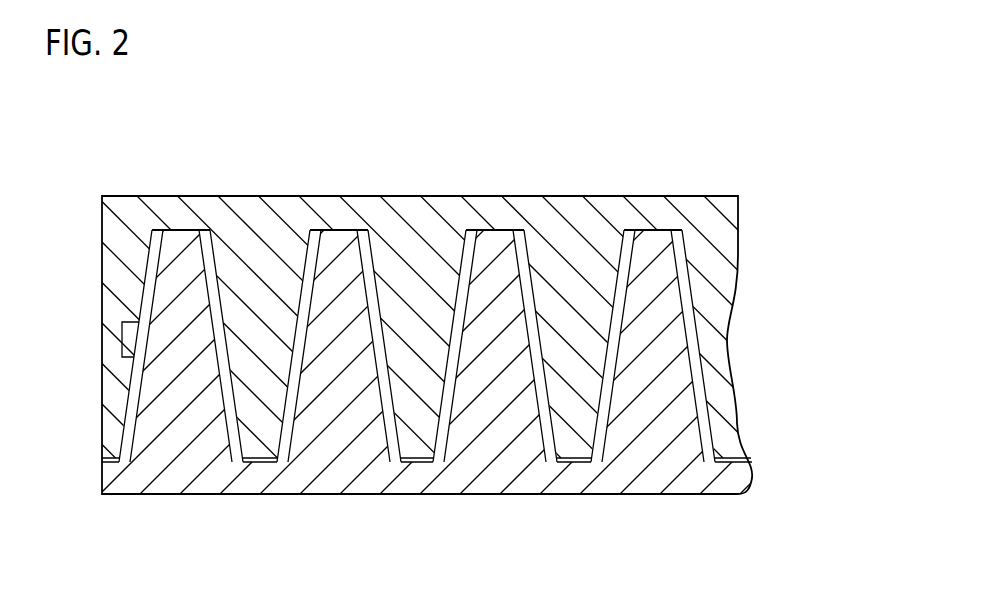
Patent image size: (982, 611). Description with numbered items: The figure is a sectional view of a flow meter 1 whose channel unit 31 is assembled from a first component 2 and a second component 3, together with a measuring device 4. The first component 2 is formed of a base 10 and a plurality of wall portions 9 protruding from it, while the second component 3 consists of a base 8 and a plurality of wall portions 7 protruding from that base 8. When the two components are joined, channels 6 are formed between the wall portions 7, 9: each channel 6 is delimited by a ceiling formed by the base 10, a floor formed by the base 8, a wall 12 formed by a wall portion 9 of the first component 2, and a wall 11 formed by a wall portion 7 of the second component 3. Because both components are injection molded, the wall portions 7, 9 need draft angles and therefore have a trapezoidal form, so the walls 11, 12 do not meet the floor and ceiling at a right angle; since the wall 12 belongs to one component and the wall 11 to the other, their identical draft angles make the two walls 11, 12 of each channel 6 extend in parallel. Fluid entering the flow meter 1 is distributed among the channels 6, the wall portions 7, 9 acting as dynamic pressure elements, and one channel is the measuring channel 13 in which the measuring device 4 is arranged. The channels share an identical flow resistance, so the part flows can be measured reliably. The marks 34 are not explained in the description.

The flow meter 1 is at (587, 136).
The first component 2 is at (250, 190).
The second component 3 is at (208, 506).
The measuring device 4 is at (122, 330).
The channels 6 is at (442, 450).
The wall portions 7 is at (652, 412).
The base 8 is at (348, 465).
The wall portions 9 is at (418, 292).
The base 10 is at (488, 213).
The wall 11 is at (472, 335).
The wall 12 is at (434, 357).
The measuring channel 13 is at (132, 417).
The channel unit 31 is at (766, 343).
The contact point 34 is at (181, 222).